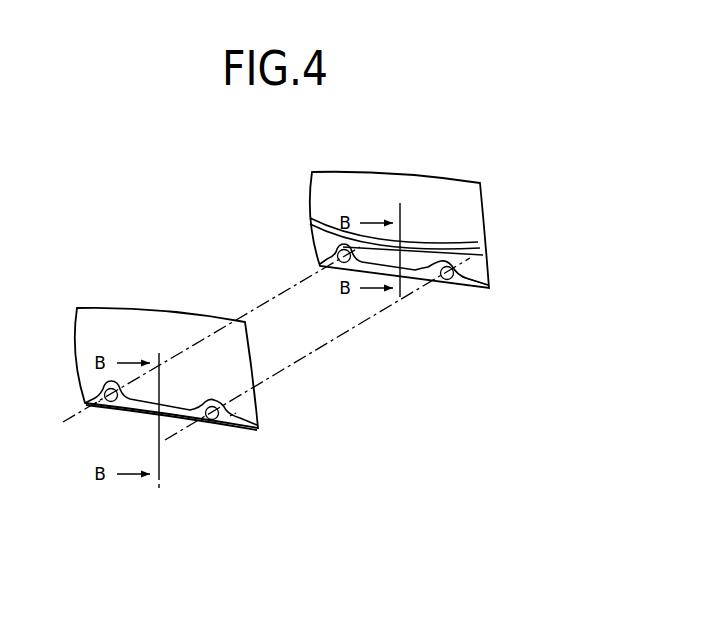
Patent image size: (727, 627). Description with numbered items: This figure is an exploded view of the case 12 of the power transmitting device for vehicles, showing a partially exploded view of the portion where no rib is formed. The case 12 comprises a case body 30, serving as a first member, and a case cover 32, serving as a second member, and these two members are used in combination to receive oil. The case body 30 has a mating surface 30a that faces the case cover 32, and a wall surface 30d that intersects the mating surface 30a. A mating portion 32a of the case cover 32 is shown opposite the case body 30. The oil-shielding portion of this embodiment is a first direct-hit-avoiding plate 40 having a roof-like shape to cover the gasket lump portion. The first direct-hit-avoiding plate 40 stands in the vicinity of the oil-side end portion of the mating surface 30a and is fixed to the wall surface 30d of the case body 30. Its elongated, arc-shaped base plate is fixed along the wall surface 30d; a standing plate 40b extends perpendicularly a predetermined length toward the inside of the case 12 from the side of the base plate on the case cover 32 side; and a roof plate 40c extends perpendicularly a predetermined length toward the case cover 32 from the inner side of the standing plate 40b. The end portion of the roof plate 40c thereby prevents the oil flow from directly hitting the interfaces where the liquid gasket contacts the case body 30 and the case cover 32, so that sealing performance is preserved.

The case 12 is at (140, 181).
The case body 30 is at (283, 193).
The mating surface 30a is at (458, 278).
The wall surface 30d is at (483, 255).
The case cover 32 is at (178, 303).
The mounting flange portion 32a is at (223, 422).
The first direct-hit-avoiding plate 40 is at (465, 237).
The standing plate 40b is at (490, 268).
The roof plate 40c is at (437, 248).